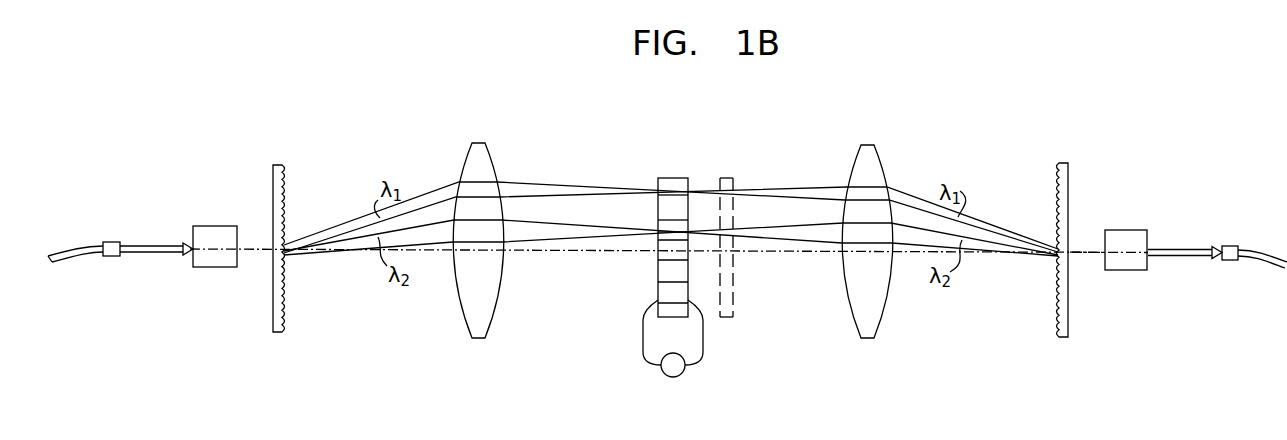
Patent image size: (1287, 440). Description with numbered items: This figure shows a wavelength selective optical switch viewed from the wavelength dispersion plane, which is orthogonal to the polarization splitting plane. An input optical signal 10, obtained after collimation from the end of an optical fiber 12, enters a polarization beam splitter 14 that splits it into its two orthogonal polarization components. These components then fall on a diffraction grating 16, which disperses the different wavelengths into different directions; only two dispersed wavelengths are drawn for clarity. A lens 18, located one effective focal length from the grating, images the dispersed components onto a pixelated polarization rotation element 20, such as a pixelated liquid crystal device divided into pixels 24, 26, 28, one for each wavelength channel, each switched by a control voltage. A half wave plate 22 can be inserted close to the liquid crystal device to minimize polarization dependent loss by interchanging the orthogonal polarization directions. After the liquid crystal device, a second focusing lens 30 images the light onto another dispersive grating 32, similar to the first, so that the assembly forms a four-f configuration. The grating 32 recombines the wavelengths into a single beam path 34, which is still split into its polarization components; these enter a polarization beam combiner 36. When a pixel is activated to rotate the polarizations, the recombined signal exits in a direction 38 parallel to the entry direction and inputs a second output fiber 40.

The input optical signal 10 is at (162, 257).
The optical fiber 12 is at (83, 247).
The polarization beam splitter 14 is at (180, 203).
The diffraction grating 16 is at (286, 168).
The lens 18 is at (493, 318).
The pixelated polarization rotation element 20 is at (655, 148).
The half wave plate 22 is at (733, 317).
The pixel 24 is at (688, 188).
The pixel 26 is at (687, 210).
The pixel 28 is at (687, 228).
The second focusing lens 30 is at (882, 316).
The dispersive grating 32 is at (1056, 171).
The single beam path 34 is at (1087, 250).
The polarization beam combiner 36 is at (1162, 207).
The exit direction 38 is at (1180, 257).
The second output fiber 40 is at (1256, 250).